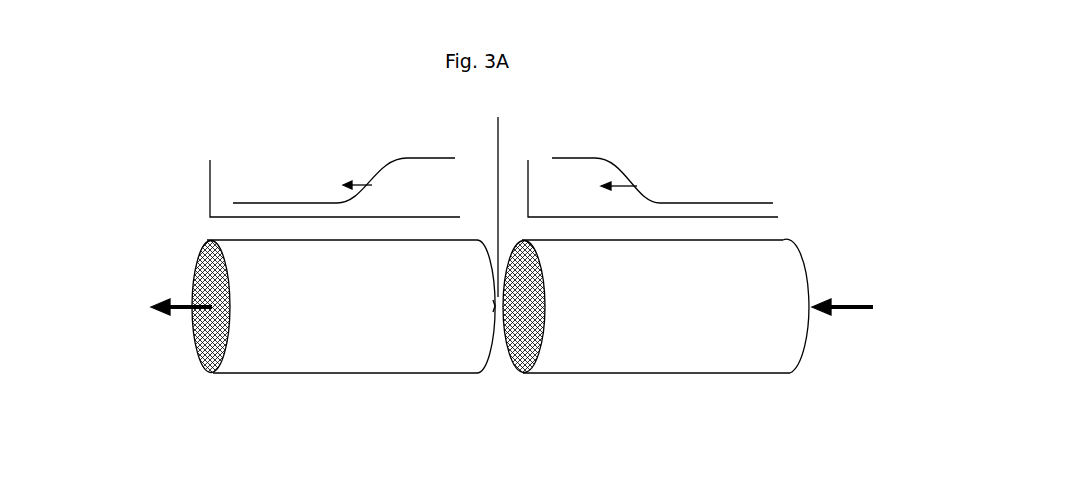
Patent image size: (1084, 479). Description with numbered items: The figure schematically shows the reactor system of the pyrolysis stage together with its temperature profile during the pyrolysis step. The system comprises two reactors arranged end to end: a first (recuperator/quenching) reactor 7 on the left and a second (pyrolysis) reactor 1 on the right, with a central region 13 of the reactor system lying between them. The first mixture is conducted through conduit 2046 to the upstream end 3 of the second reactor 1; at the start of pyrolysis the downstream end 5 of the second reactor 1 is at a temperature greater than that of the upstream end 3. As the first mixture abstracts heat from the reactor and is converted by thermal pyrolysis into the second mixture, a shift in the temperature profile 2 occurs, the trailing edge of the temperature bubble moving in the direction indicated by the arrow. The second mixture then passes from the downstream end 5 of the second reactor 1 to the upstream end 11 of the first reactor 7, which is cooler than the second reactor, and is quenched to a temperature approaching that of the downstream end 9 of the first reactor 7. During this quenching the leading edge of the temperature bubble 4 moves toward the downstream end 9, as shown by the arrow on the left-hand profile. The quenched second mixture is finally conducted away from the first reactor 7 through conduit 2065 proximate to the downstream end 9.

The second reactor 1 is at (680, 335).
The temperature profile 2 is at (630, 177).
The upstream end 3 is at (800, 353).
The temperature bubble 4 is at (377, 180).
The downstream end 5 is at (520, 377).
The first reactor 7 is at (335, 342).
The downstream end 9 is at (205, 373).
The upstream end 11 is at (490, 353).
The central region 13 is at (496, 196).
The conduit 2046 is at (845, 300).
The conduit 2065 is at (180, 313).